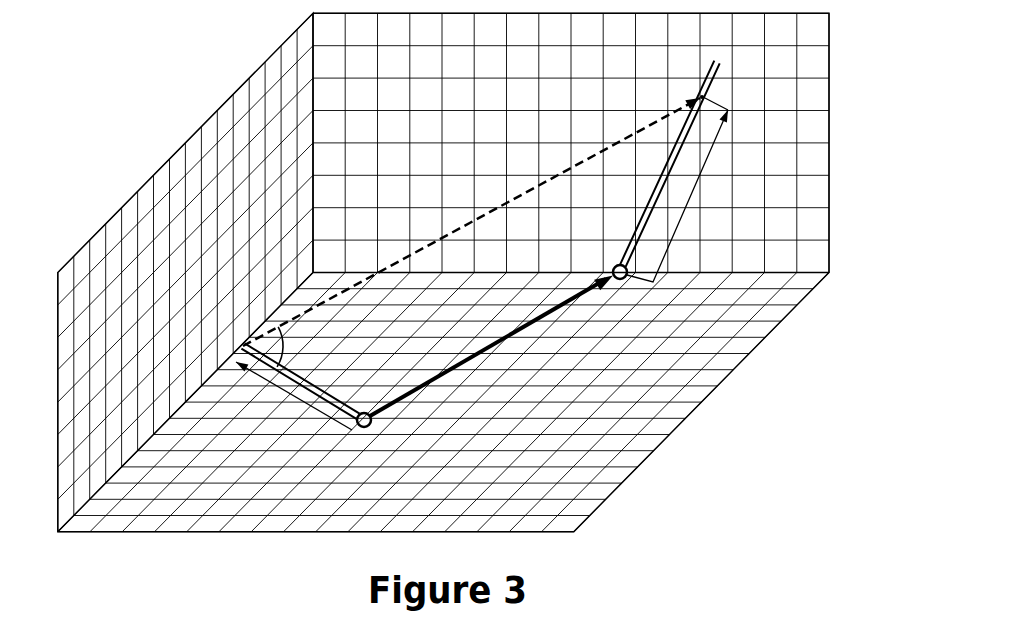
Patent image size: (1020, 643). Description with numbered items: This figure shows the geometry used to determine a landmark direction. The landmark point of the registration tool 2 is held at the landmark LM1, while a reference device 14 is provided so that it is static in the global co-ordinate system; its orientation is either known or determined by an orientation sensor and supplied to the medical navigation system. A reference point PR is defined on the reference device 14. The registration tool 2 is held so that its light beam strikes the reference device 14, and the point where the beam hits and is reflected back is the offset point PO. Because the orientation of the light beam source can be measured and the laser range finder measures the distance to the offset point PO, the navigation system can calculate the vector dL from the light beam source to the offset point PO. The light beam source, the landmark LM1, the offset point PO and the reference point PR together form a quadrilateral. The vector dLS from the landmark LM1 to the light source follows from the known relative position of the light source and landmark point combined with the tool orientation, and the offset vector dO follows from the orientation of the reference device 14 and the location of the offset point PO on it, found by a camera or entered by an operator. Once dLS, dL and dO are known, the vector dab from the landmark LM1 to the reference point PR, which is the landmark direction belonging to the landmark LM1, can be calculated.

The registration tool 2 is at (318, 393).
The reference device 14 is at (647, 202).
The landmark LM1 is at (370, 423).
The reference point PR is at (622, 282).
The offset point PO is at (703, 95).
The vector from light beam source to offset point dL is at (482, 190).
The vector from landmark to light source dLS is at (277, 399).
The landmark direction vector dab is at (533, 346).
The offset vector dO is at (718, 185).